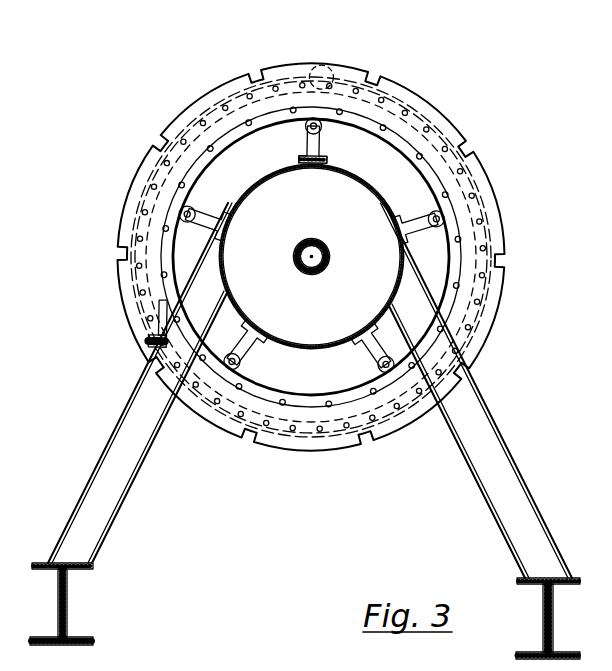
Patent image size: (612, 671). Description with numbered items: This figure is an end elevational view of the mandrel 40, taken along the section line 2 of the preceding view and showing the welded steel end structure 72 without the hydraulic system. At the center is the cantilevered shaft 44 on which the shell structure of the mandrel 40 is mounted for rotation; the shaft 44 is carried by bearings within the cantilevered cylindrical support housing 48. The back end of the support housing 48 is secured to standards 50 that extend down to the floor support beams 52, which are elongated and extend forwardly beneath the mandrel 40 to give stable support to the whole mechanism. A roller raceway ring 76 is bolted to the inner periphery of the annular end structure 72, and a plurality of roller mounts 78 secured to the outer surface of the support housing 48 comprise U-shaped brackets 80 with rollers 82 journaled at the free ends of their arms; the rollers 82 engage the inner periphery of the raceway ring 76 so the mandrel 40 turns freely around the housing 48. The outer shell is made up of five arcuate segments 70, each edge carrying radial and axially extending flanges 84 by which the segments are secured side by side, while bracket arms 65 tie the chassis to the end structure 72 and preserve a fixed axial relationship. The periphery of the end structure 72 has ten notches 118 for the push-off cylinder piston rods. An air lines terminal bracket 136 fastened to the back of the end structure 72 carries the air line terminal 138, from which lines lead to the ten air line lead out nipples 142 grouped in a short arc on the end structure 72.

The section line 2- 2 is at (314, 108).
The mandrel 40 is at (306, 258).
The cantilevered shaft 44 is at (311, 256).
The cantilevered cylindrical support housing 48 is at (311, 256).
The standards 50 is at (93, 476).
The floor support beams 52 is at (95, 563).
The bracket arms 65 is at (311, 257).
The arcuate segments 70 is at (311, 257).
The welded steel end structure 72 is at (311, 257).
The roller raceway ring 76 is at (311, 257).
The roller mounts 78 is at (313, 160).
The U-shaped brackets 80 is at (312, 257).
The rollers 82 is at (311, 244).
The flanges 84 is at (321, 77).
The notches 118 is at (311, 257).
The air lines terminal bracket 136 is at (157, 341).
The air line terminal 138 is at (162, 317).
The air line lead out nipples 142 is at (310, 256).